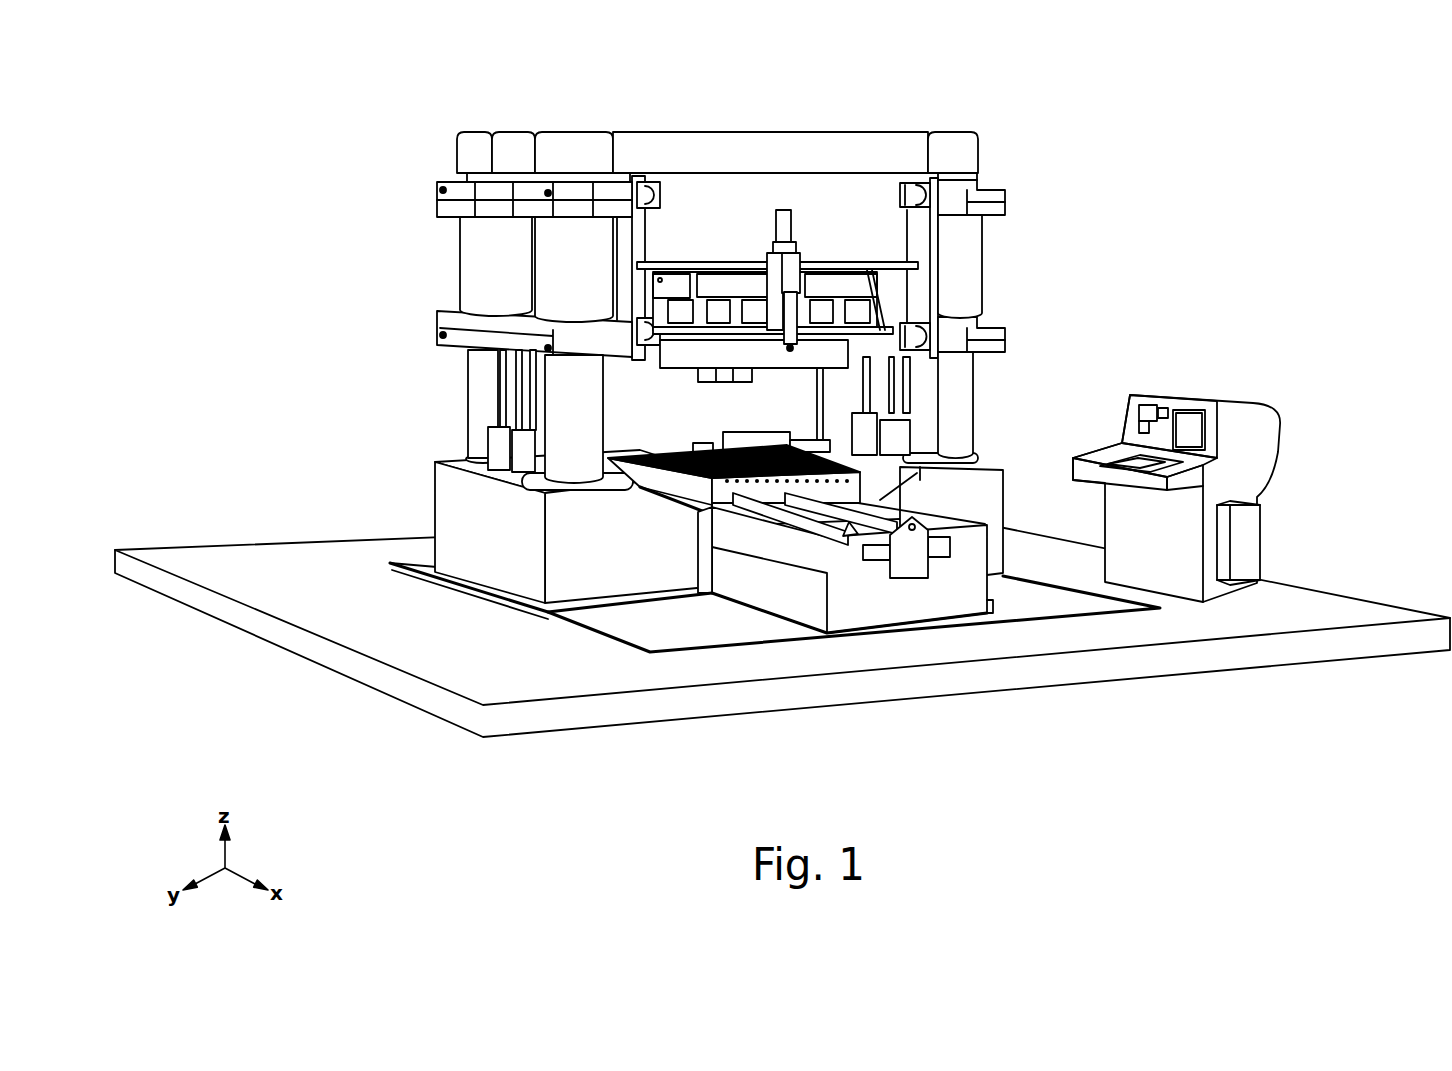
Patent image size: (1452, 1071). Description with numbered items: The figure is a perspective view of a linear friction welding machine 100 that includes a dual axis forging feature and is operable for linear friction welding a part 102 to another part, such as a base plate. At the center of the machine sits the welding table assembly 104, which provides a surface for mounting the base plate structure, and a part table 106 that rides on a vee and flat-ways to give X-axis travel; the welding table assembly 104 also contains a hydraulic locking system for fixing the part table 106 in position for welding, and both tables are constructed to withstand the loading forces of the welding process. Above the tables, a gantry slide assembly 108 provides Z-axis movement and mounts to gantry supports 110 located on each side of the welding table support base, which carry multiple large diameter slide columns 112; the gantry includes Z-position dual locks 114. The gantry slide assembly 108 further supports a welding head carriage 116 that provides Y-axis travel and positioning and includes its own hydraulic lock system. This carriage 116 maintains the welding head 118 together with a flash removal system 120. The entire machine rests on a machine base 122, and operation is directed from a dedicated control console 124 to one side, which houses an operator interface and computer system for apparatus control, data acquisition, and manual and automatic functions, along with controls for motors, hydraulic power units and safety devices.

The linear friction welding machine 100 is at (782, 425).
The part 102 is at (655, 466).
The welding table assembly 104 is at (797, 547).
The part table 106 is at (698, 488).
The gantry slide assembly 108 is at (440, 317).
The gantry supports 110 is at (440, 528).
The slide columns 112 is at (620, 331).
The Z-position dual locks 114 is at (597, 362).
The welding head carriage 116 is at (883, 337).
The welding head 118 is at (735, 378).
The flash removal system 120 is at (800, 257).
The machine base 122 is at (970, 648).
The control console 124 is at (1253, 465).